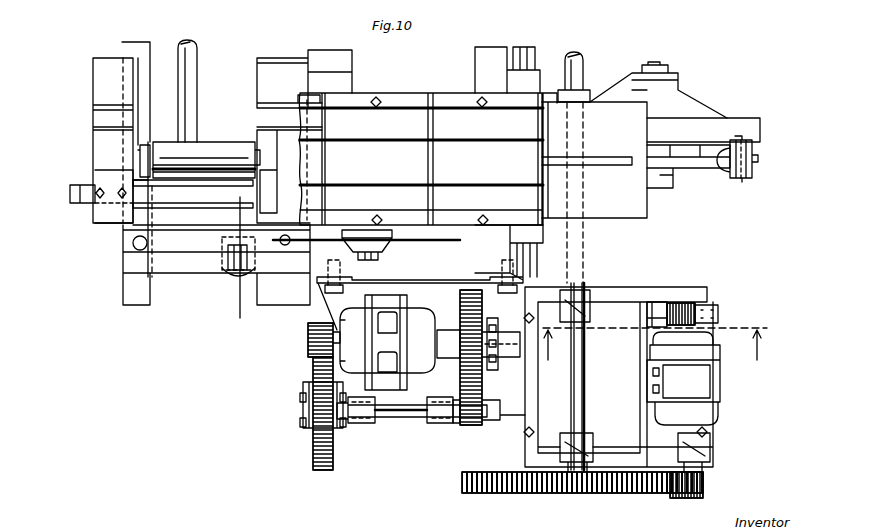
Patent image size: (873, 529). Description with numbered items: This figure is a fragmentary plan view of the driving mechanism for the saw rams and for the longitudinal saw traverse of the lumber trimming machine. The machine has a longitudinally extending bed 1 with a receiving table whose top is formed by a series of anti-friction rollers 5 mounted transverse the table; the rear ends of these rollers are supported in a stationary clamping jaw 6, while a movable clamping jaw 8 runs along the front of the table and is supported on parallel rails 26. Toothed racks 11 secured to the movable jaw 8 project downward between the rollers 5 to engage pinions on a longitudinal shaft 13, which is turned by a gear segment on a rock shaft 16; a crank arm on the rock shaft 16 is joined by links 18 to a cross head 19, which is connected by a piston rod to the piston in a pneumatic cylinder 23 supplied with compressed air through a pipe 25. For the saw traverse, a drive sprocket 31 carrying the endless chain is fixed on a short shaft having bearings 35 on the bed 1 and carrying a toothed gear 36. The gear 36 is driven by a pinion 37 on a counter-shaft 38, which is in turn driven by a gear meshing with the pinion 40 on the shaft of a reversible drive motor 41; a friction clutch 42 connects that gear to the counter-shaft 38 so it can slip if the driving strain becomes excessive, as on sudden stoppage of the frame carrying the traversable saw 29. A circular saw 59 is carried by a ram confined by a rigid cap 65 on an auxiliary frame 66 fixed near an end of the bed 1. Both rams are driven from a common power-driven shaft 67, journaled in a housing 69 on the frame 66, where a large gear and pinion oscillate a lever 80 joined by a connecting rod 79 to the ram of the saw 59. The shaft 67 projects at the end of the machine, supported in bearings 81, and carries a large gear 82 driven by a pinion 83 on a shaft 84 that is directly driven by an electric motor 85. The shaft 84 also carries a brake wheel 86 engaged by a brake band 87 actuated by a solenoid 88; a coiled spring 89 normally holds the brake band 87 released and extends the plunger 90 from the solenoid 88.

The bed 1 is at (452, 61).
The anti-friction rollers 5 is at (216, 145).
The stationary clamping jaw 6 is at (263, 93).
The movable clamping jaw 8 is at (140, 144).
The toothed racks 11 is at (80, 205).
The longitudinal shaft 13 is at (192, 30).
The rock shaft 16 is at (216, 265).
The links 18 is at (232, 201).
The cross head 19 is at (652, 354).
The pneumatic cylinder 23 is at (227, 258).
The pipe 25 is at (440, 358).
The parallel rails 26 is at (467, 287).
The traversable saw 29 is at (312, 455).
The drive sprocket 31 is at (496, 370).
The bearings 35 is at (527, 303).
The toothed gear 36 is at (460, 335).
The pinion 37 is at (458, 425).
The counter-shaft 38 is at (400, 418).
The pinion 40 is at (306, 340).
The drive motor 41 is at (387, 342).
The friction clutch 42 is at (300, 408).
The circular saw 59 is at (398, 228).
The rigid cap 65 is at (630, 212).
The auxiliary frame 66 is at (428, 159).
The power-driven shaft 67 is at (570, 52).
The housing 69 is at (602, 92).
The connecting rod 79 is at (690, 160).
The lever 80 is at (755, 156).
The bearings 81 is at (594, 415).
The large gear 82 is at (553, 493).
The pinion 83 is at (703, 485).
The shaft 84 is at (710, 448).
The electric motor 85 is at (710, 414).
The brake wheel 86 is at (700, 305).
The brake band 87 is at (718, 312).
The solenoid 88 is at (660, 302).
The coiled spring 89 is at (665, 330).
The plunger 90 is at (683, 303).